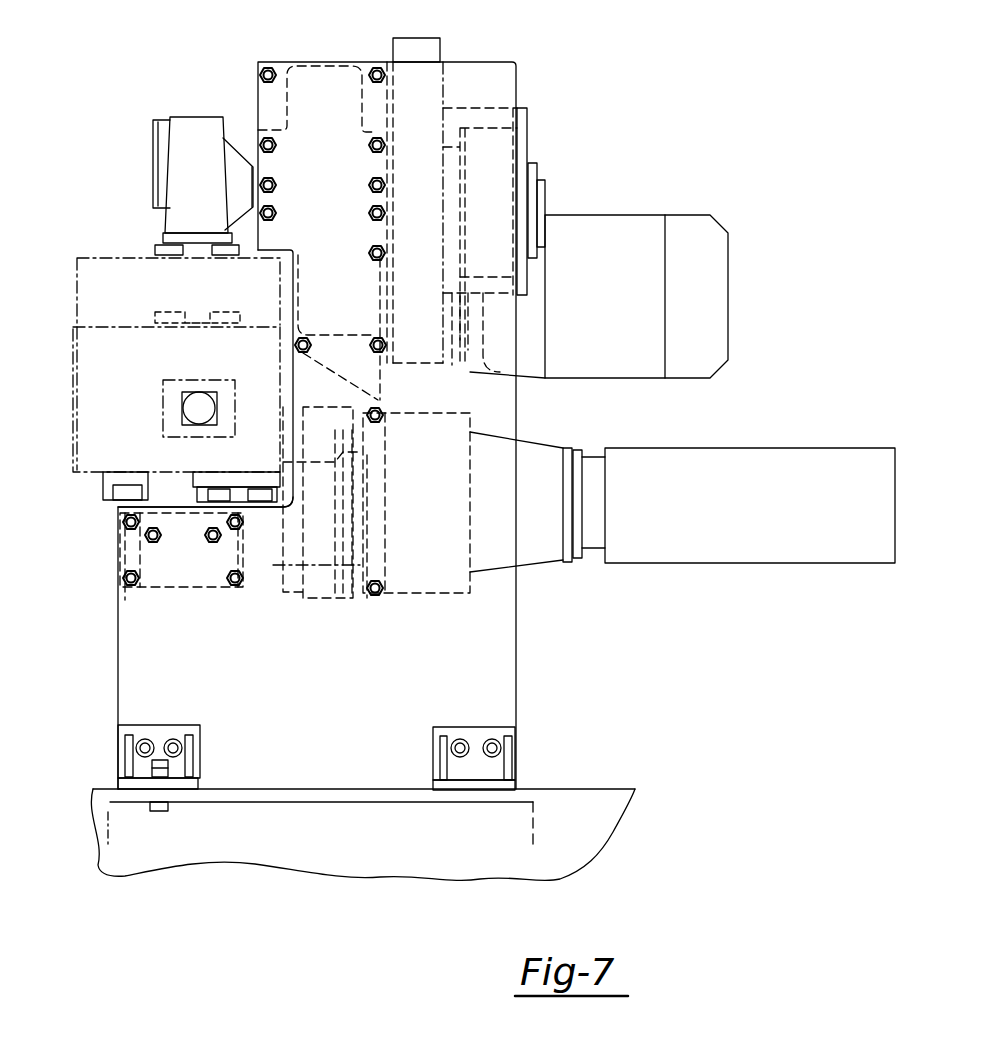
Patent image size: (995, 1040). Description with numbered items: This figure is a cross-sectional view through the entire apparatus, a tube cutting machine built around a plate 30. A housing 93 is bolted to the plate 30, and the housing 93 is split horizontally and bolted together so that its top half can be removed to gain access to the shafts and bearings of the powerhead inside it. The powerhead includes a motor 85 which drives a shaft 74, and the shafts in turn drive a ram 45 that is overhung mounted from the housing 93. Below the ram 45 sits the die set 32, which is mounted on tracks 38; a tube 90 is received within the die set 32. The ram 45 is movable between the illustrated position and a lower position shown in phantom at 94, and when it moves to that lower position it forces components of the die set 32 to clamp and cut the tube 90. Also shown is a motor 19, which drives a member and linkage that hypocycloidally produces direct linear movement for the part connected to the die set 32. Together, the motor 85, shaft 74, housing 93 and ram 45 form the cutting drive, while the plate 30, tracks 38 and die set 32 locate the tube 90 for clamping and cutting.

The motor 19 is at (700, 512).
The plate 30 is at (493, 653).
The die set 32 is at (102, 452).
The tracks 38 is at (130, 495).
The ram 45 is at (190, 125).
The shaft 74 is at (493, 175).
The motor 85 is at (614, 303).
The tube 90 is at (180, 410).
The housing 93 is at (258, 97).
The lower position of the ram 94 is at (165, 315).